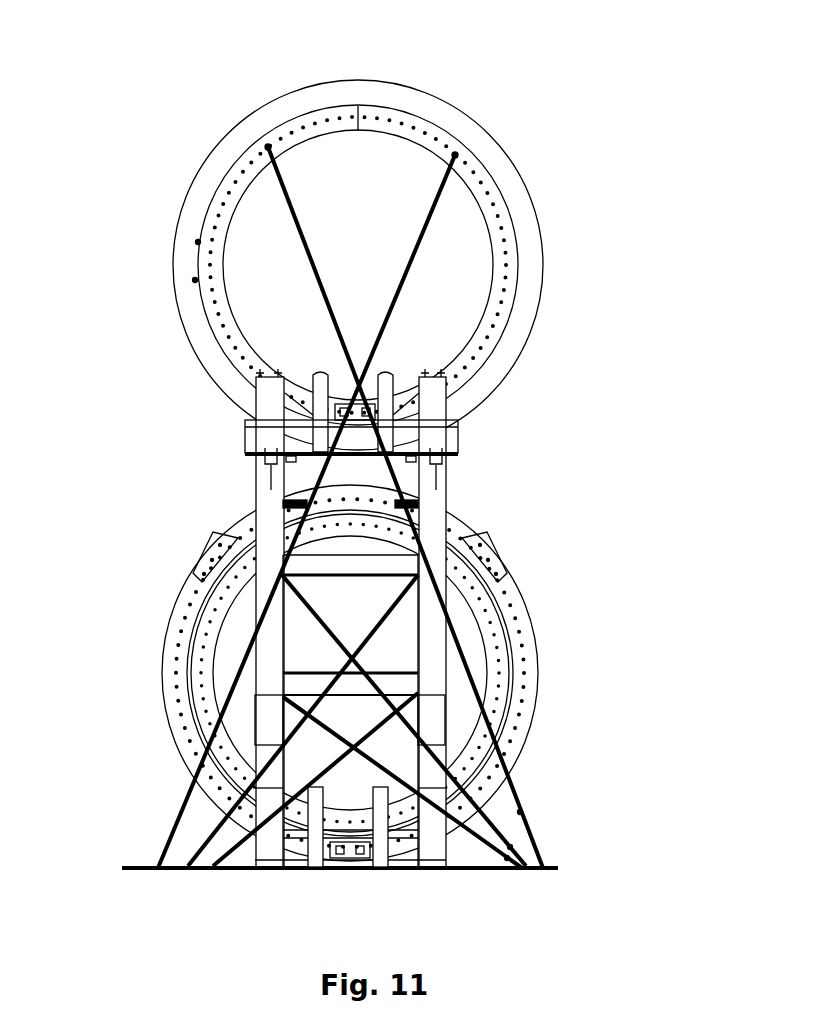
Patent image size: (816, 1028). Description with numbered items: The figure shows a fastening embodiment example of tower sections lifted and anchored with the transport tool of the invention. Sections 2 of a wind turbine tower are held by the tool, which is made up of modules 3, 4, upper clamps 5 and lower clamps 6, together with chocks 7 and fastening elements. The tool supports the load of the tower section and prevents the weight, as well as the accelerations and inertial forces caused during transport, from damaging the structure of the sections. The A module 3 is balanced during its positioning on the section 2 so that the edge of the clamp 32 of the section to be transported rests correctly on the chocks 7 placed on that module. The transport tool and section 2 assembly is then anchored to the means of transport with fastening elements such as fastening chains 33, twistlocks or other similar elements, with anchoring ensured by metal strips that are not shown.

The section 2 is at (452, 125).
The module 3 is at (450, 395).
The module 4 is at (240, 502).
The upper clamp 5 is at (413, 505).
The lower clamp 6 is at (330, 855).
The chock 7 is at (455, 432).
The clamp of the section 32 is at (228, 182).
The fastening chains 33 is at (195, 280).